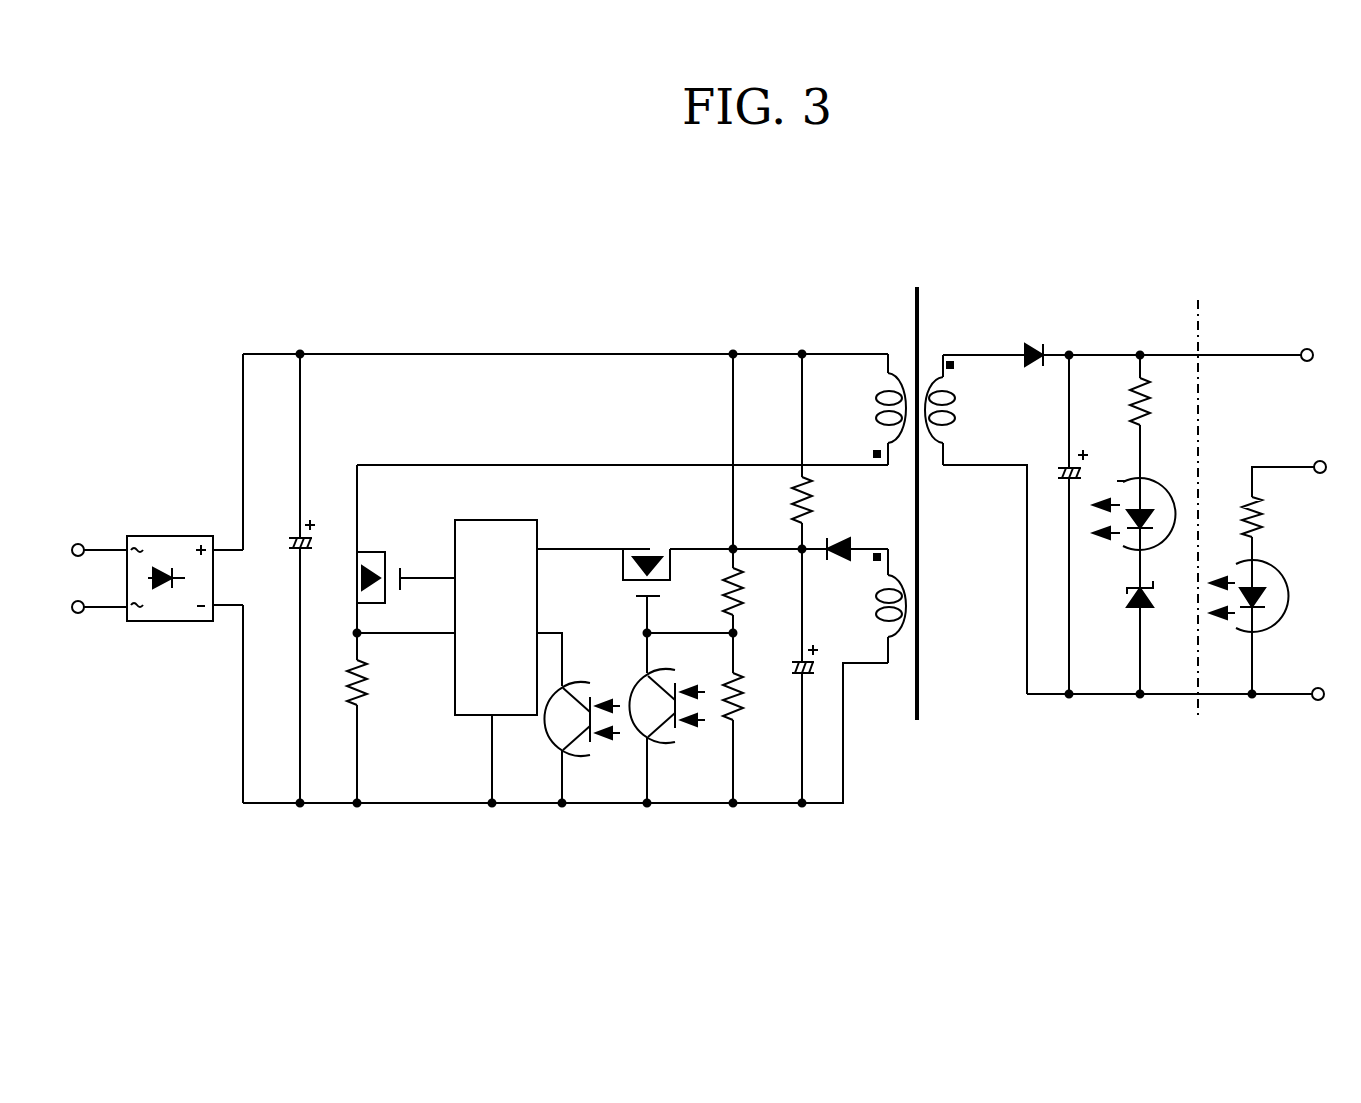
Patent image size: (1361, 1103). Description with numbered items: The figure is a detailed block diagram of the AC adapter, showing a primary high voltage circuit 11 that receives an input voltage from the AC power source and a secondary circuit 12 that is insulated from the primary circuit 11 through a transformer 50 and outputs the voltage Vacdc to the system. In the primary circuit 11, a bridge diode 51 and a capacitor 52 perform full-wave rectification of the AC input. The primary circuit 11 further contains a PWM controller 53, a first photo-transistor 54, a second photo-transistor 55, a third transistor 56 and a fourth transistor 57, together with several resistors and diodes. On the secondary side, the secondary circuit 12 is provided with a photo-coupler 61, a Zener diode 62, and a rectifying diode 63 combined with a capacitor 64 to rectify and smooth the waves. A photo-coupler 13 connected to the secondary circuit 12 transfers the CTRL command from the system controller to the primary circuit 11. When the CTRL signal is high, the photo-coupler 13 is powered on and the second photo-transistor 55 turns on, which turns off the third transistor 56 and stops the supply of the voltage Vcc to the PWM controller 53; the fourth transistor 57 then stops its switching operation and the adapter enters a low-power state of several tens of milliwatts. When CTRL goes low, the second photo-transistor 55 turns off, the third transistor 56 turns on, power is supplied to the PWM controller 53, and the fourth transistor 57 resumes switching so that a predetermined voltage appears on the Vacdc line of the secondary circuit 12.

The primary high voltage circuit 11 is at (489, 288).
The secondary circuit 12 is at (1150, 310).
The photo-coupler 13 is at (1289, 596).
The transformer 50 is at (929, 297).
The bridge diode (D5) 51 is at (160, 622).
The capacitor 52 is at (289, 544).
The PWM controller (PWM IC) 53 is at (487, 519).
The photo-transistor (TR1) 54 is at (572, 757).
The photo-transistor (TR2) 55 is at (660, 745).
The transistor (TR3) 56 is at (665, 548).
The transistor (TR4) 57 is at (365, 551).
The photo-coupler (D1) 61 is at (1123, 545).
The Zener diode 62 is at (1134, 600).
The diode (D3) 63 is at (1022, 352).
The capacitor 64 is at (1064, 467).